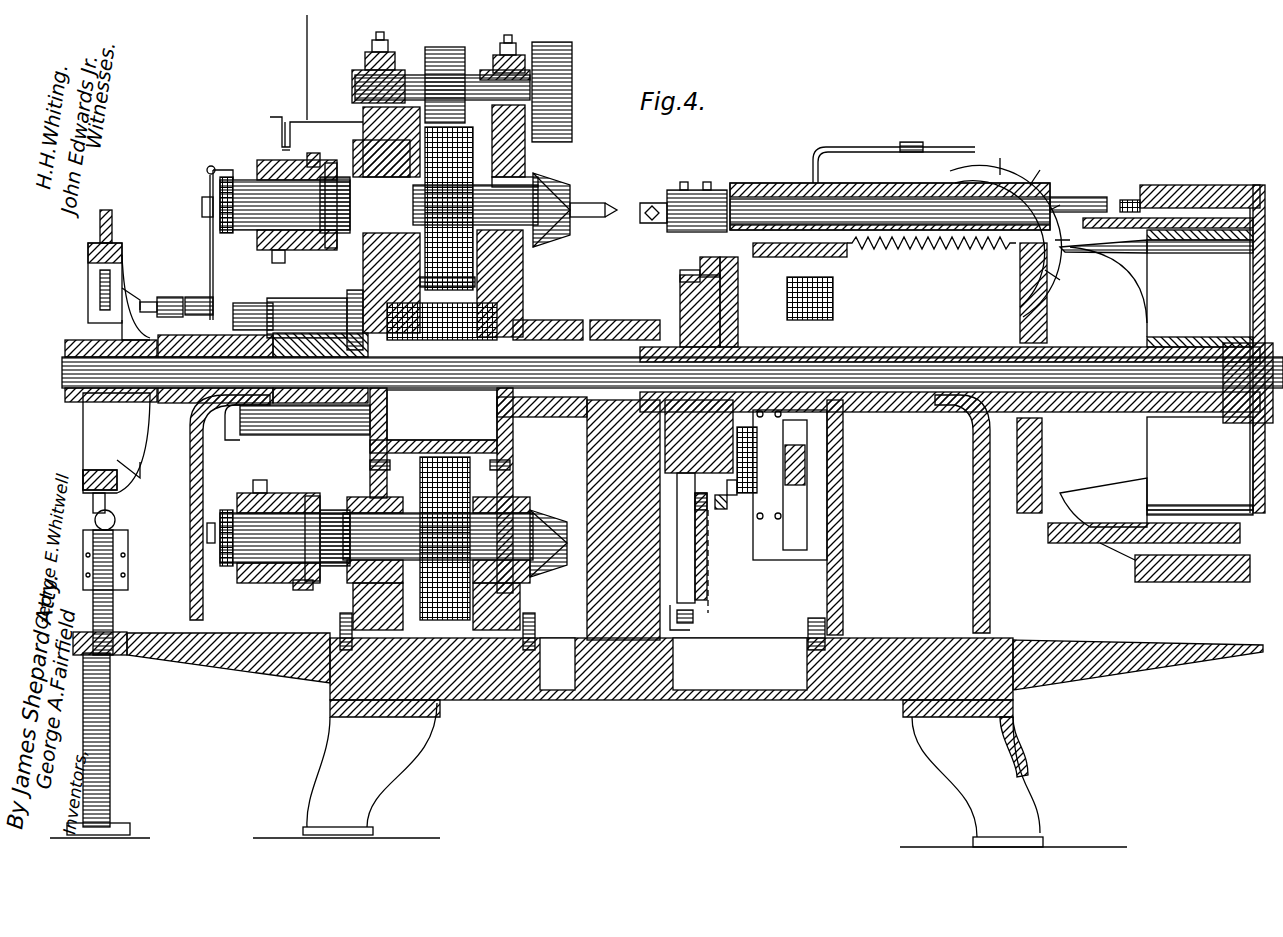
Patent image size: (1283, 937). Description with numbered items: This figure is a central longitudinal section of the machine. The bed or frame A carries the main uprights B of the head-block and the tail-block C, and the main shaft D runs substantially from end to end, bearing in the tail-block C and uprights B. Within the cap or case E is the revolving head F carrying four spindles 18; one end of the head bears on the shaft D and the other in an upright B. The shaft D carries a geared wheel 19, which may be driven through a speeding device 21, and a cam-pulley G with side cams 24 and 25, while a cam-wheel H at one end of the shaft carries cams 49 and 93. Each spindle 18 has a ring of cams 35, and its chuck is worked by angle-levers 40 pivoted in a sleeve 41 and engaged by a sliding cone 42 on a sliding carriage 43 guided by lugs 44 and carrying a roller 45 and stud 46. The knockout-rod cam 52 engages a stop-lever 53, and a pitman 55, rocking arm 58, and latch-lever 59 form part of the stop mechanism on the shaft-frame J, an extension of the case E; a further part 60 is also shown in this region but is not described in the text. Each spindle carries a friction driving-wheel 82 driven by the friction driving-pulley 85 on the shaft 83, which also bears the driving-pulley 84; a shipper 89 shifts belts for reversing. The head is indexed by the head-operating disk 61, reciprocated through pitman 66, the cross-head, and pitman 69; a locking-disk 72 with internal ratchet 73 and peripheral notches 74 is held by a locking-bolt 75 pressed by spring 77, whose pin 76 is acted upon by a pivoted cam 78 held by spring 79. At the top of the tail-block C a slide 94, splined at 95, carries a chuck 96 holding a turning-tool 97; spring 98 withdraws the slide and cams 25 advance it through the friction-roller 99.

The spindle 18 is at (440, 372).
The geared wheel 19 is at (1042, 475).
The speeding device 21 is at (941, 229).
The cams 24 is at (1078, 247).
The cams 25 is at (1130, 198).
The cams 35 is at (572, 374).
The angle-levers 40 is at (300, 170).
The sleeve 41 is at (335, 371).
The sliding cone 42 is at (285, 371).
The sliding carriage 43 is at (322, 250).
The lugs 44 is at (320, 315).
The roller 45 is at (318, 373).
The stud 46 is at (272, 260).
The cams 49 is at (125, 305).
The cam 52 is at (202, 203).
The stop-lever 53 is at (212, 180).
The pitman 55 is at (210, 253).
The rocking arm 58 is at (282, 150).
The latch-lever 59 is at (270, 118).
The rod 60 is at (307, 48).
The head-operating disk 61 is at (738, 300).
The pitman 66 is at (795, 480).
The pitman 69 is at (757, 470).
The locking-disk 72 is at (680, 298).
The internal ratchet 73 is at (703, 275).
The peripheral notches 74 is at (660, 475).
The locking-bolt 75 is at (691, 543).
The laterally-projecting pin 76 is at (705, 505).
The spring 77 is at (693, 616).
The cam 78 is at (727, 502).
The spring 79 is at (742, 486).
The friction driving-wheel 82 is at (425, 268).
The shaft 83 is at (355, 83).
The driving-pulley 84 is at (526, 92).
The friction driving-pulley 85 is at (445, 85).
The shipper 89 is at (193, 300).
The cams 93 is at (112, 518).
The slide 94 is at (745, 190).
The spline 95 is at (850, 210).
The chuck 96 is at (697, 207).
The roughing-box or turning-tool 97 is at (642, 218).
The spring 98 is at (878, 250).
The friction-roller 99 is at (1108, 200).
The bed or frame A is at (668, 739).
The main uprights B is at (409, 514).
The tail-block C is at (908, 515).
The main shaft D is at (70, 372).
The cap or case E is at (522, 612).
The revolving head F is at (442, 415).
The cam-pulley G is at (1146, 350).
The cam-wheel H is at (88, 283).
The shaft-frame J is at (165, 327).